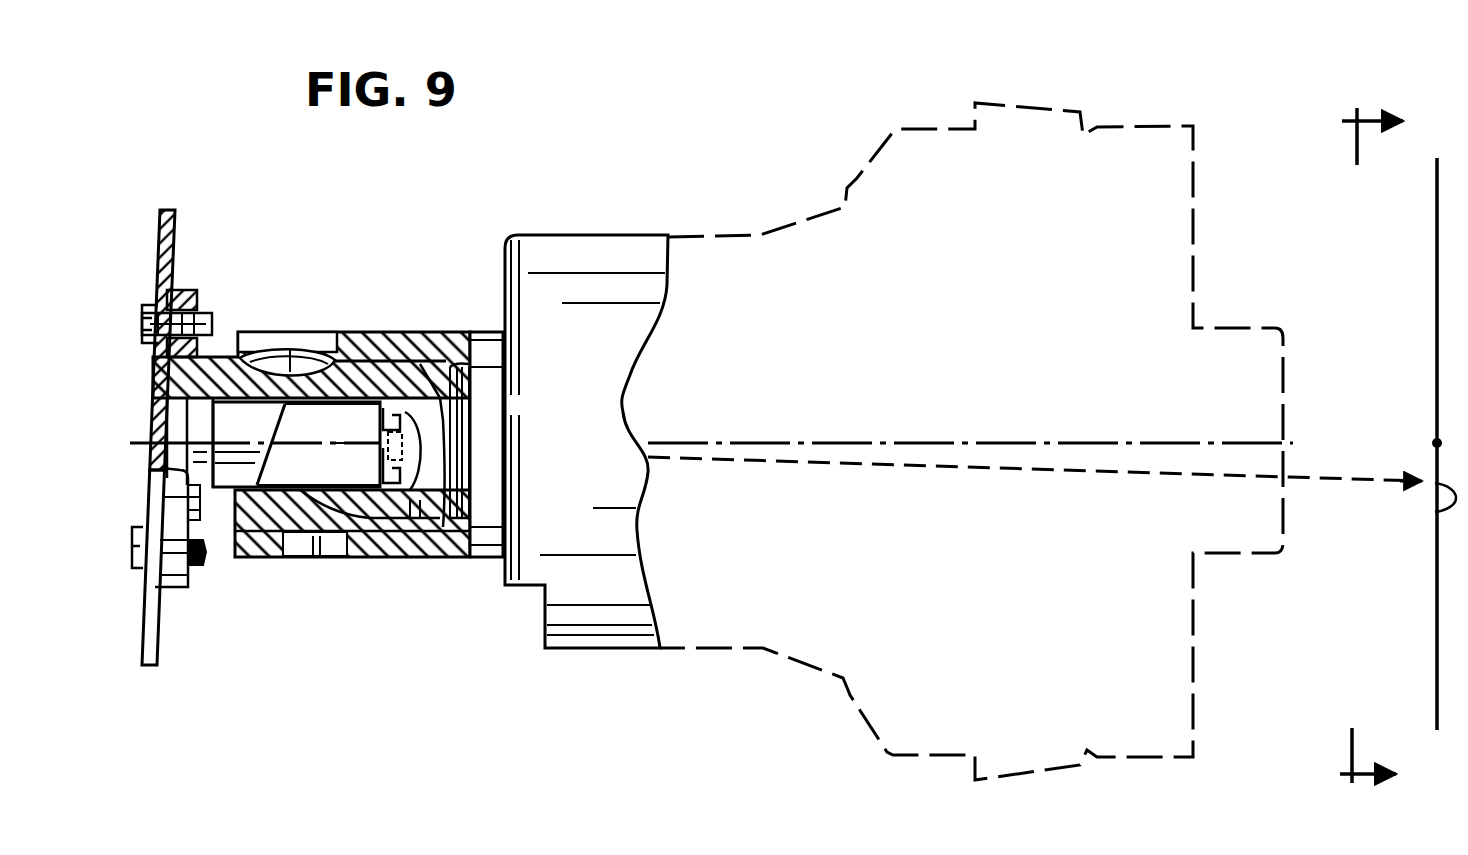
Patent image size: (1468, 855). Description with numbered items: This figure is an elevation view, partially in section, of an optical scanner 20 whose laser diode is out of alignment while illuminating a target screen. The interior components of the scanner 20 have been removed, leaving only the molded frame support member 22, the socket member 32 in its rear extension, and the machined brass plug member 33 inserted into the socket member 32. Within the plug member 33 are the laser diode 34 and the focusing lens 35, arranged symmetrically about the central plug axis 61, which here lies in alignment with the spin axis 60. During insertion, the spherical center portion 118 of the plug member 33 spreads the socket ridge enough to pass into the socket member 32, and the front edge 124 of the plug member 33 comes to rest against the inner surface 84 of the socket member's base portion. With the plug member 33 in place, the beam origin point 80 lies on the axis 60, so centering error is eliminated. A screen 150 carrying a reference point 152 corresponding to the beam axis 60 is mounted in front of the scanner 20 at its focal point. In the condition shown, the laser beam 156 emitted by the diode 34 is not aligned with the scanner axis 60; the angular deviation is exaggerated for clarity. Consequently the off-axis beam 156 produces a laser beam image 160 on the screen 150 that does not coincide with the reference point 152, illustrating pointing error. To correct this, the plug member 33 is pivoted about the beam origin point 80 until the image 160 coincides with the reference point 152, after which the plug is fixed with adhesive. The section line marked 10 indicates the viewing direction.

The section line 10 is at (1355, 448).
The optical scanner 20 is at (776, 143).
The frame support member 22 is at (943, 128).
The socket member 32 is at (372, 330).
The plug member 33 is at (188, 600).
The laser diode 34 is at (258, 422).
The focusing lens 35 is at (410, 535).
The spin axis 60 is at (1057, 441).
The central plug axis 61 is at (150, 441).
The beam origin point 80 is at (270, 442).
The inner surface 84 is at (450, 522).
The spherical center portion 118 is at (290, 350).
The front edge 124 is at (462, 400).
The screen 150 is at (1435, 278).
The reference point 152 is at (1436, 443).
The laser beam 156 is at (707, 460).
The laser beam image 160 is at (1436, 507).